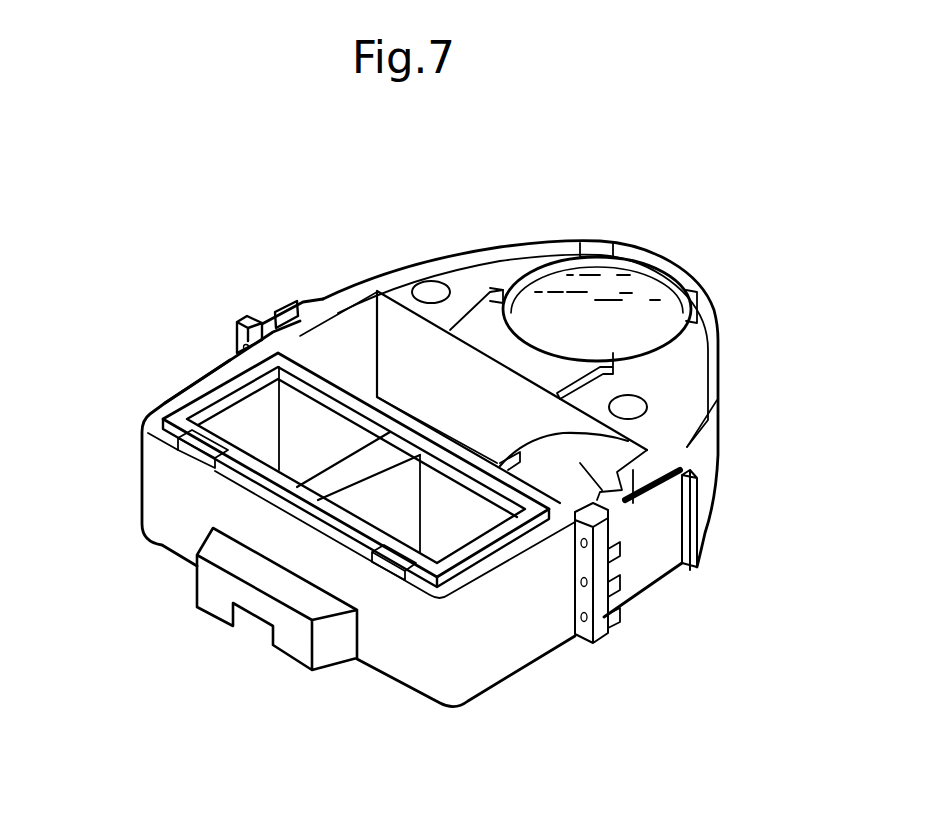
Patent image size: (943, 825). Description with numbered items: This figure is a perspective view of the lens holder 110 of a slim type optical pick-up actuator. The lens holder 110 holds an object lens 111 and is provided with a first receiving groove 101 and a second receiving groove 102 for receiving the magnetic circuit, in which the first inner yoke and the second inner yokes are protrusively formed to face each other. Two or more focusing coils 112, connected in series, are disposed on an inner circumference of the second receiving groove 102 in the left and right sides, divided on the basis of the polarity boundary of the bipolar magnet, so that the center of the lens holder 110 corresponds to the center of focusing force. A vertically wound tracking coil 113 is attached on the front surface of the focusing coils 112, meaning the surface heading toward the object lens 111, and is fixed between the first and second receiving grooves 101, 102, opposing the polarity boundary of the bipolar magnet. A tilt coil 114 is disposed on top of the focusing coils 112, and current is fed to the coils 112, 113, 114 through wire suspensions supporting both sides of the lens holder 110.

The first receiving groove 101 is at (425, 352).
The second receiving groove 102 is at (325, 430).
The lens holder 110 is at (472, 272).
The object lens 111 is at (650, 280).
The focusing coils 112 is at (337, 470).
The tracking coil 113 is at (687, 447).
The tilt coil 114 is at (168, 400).